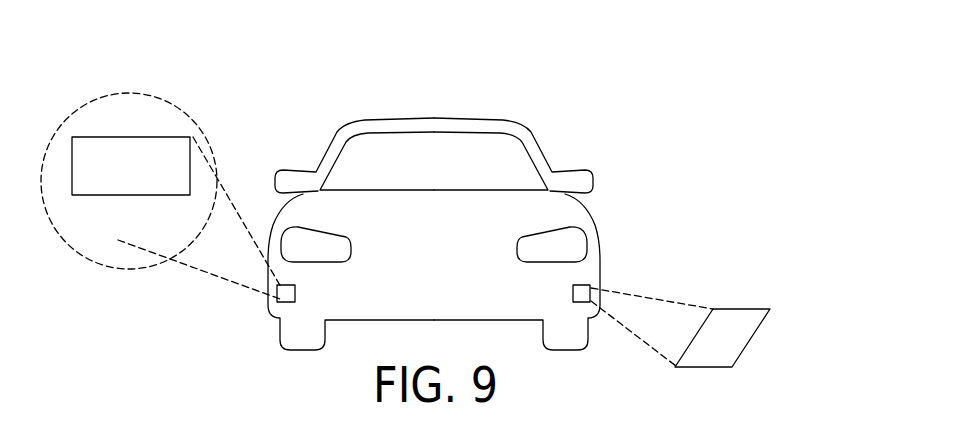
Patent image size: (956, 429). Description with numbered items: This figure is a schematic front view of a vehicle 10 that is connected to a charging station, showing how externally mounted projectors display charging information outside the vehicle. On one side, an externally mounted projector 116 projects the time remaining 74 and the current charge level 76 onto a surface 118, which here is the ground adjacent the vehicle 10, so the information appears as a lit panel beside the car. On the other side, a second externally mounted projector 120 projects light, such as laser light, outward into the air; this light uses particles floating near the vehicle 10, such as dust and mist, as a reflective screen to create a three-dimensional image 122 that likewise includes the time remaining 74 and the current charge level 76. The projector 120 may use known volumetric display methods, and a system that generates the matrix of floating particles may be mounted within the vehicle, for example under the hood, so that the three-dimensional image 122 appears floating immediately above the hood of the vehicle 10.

The vehicle 10 is at (449, 265).
The time remaining 74 is at (160, 145).
The current charge level 76 is at (112, 223).
The externally mounted projector 116 is at (583, 292).
The surface 118 is at (830, 398).
The externally mounted projector 120 is at (286, 301).
The three-dimensional image 122 is at (155, 93).